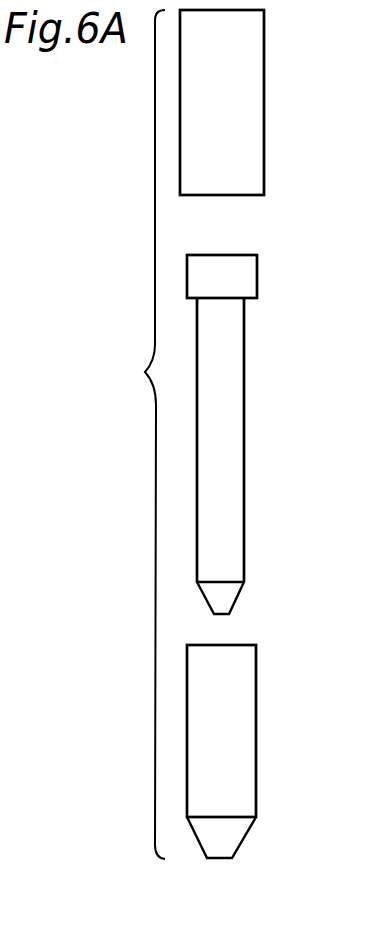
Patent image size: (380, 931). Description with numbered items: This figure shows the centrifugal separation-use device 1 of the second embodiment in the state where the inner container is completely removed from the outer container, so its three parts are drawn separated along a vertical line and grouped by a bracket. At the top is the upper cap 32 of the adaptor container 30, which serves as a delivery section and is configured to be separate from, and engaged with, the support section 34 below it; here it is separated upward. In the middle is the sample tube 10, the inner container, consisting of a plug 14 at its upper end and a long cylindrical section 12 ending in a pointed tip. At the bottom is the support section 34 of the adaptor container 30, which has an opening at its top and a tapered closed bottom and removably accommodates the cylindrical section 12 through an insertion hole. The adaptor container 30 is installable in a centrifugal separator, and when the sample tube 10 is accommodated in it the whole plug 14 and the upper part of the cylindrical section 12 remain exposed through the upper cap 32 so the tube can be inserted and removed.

The centrifugal separation-use device 1 is at (140, 386).
The sample tube 10 is at (262, 422).
The cylindrical section 12 is at (245, 343).
The plug 14 is at (257, 281).
The adaptor container 30 is at (284, 70).
The upper cap 32 is at (264, 124).
The support section 34 is at (256, 728).